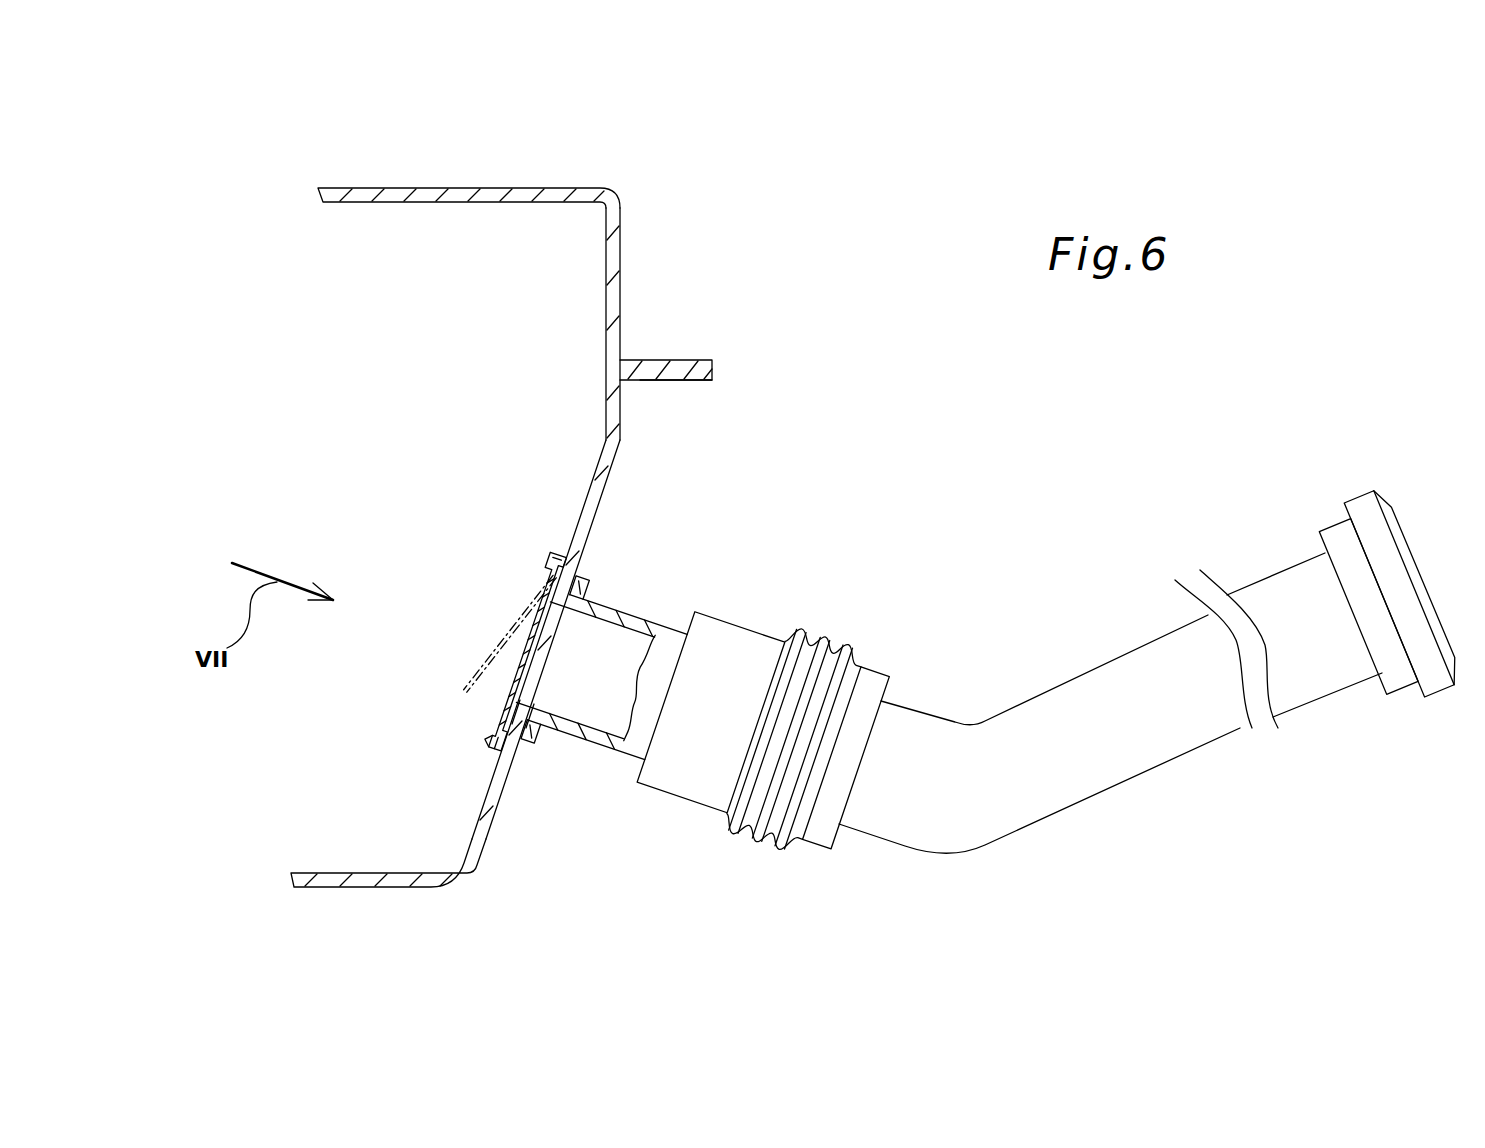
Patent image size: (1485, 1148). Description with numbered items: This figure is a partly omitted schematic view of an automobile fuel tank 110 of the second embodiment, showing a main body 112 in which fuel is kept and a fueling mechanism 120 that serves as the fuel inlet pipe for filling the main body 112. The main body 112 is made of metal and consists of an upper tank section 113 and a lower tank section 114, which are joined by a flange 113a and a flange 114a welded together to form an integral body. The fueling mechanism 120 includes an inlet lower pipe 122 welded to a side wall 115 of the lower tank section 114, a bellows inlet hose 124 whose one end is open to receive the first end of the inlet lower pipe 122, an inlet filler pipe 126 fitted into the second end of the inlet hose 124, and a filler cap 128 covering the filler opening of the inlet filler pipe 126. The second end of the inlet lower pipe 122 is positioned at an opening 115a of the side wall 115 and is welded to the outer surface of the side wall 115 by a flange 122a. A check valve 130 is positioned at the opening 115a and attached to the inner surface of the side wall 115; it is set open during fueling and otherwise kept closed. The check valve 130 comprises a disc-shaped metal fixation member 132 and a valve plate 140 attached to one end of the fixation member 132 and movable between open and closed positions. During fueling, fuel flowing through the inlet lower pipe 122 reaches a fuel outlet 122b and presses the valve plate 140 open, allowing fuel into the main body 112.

The fuel tank 110 is at (665, 224).
The main body 112 is at (513, 188).
The upper tank section 113 is at (620, 328).
The flange 113a is at (655, 365).
The lower tank section 114 is at (607, 455).
The flange 114a is at (675, 375).
The side wall 115 is at (483, 830).
The opening 115a is at (530, 690).
The fueling mechanism 120 is at (873, 582).
The inlet lower pipe 122 is at (632, 609).
The flange 122a is at (587, 576).
The fuel outlet 122b is at (557, 667).
The bellows inlet hose 124 is at (870, 700).
The inlet filler pipe 126 is at (1096, 714).
The filler cap 128 is at (1363, 520).
The check valve 130 is at (512, 610).
The fixation member 132 is at (494, 757).
The valve plate 140 is at (468, 657).